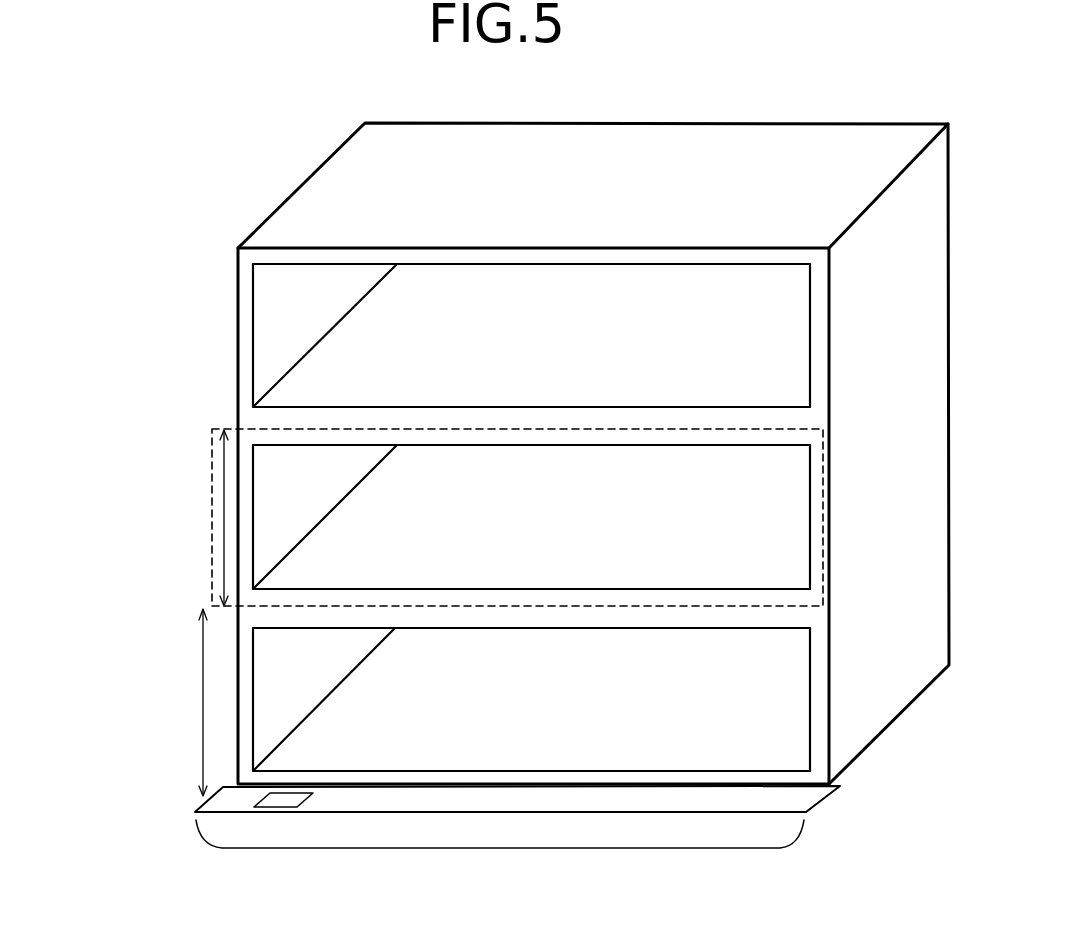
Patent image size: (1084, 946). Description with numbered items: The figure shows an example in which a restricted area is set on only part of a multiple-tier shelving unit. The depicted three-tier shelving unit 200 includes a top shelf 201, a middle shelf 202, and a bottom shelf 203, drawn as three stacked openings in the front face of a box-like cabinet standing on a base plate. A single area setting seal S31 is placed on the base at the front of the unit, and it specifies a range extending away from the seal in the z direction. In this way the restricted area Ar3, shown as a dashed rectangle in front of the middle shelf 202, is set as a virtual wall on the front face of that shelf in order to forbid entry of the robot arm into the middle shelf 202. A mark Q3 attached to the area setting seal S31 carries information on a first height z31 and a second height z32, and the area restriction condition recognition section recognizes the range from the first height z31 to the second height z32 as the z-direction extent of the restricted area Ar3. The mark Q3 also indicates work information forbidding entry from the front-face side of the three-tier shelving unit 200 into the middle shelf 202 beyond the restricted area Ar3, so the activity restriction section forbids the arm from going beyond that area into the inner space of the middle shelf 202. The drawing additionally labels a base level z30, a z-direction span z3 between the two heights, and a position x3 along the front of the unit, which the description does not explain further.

The three-tier shelving unit 200 is at (661, 168).
The bottom shelf 203 is at (773, 346).
The middle shelf 202 is at (772, 521).
The top shelf 201 is at (760, 689).
The restricted area Ar3 is at (607, 429).
The area setting seal S31 is at (788, 799).
The mark Q3 is at (288, 802).
The x-axis coordinate x3 is at (500, 848).
The z-dimension z3 is at (128, 426).
The z-coordinate z30 is at (240, 797).
The first height z31 is at (240, 607).
The second height z32 is at (240, 429).